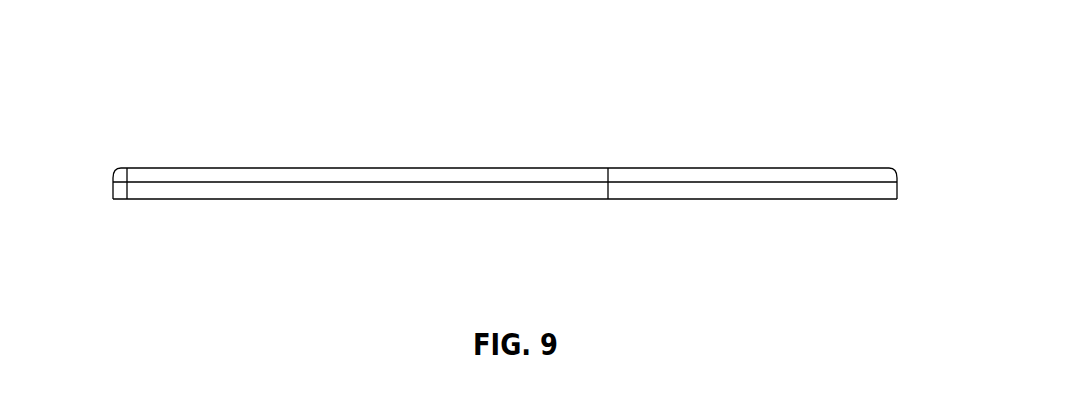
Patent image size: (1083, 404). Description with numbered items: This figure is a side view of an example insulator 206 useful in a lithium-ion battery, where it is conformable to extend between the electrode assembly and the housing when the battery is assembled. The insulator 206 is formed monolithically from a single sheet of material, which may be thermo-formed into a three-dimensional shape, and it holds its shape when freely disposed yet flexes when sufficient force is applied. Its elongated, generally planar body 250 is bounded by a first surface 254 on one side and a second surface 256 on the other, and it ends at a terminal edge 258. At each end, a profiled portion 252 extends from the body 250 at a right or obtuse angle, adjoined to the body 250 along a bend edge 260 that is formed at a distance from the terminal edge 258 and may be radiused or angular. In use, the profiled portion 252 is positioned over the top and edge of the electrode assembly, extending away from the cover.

The insulator 206 is at (260, 89).
The body 250 is at (395, 167).
The profiled portion 252 is at (113, 190).
The first surface 254 is at (520, 168).
The second surface 256 is at (747, 200).
The terminal edge 258 is at (435, 200).
The bend edge 260 is at (121, 167).